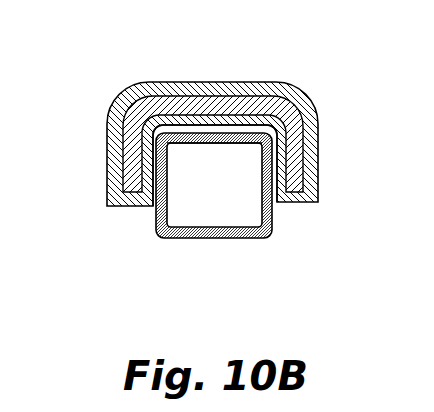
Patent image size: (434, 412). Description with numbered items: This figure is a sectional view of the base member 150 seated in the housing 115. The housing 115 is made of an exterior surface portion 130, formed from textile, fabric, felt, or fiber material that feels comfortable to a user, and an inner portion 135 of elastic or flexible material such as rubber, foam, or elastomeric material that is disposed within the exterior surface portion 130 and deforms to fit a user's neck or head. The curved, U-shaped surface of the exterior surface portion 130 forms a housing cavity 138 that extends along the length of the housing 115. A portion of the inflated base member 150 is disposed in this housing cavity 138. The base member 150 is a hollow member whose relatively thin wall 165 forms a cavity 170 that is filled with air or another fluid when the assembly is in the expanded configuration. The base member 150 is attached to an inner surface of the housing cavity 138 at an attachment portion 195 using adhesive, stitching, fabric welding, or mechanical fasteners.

The housing 115 is at (93, 86).
The exterior surface portion 130 is at (116, 203).
The inner portion 135 is at (138, 113).
The wall 165 is at (268, 228).
The base member 150 is at (277, 214).
The cavity 170 is at (250, 208).
The housing cavity 138 is at (178, 175).
The attachment portion 195 is at (205, 147).